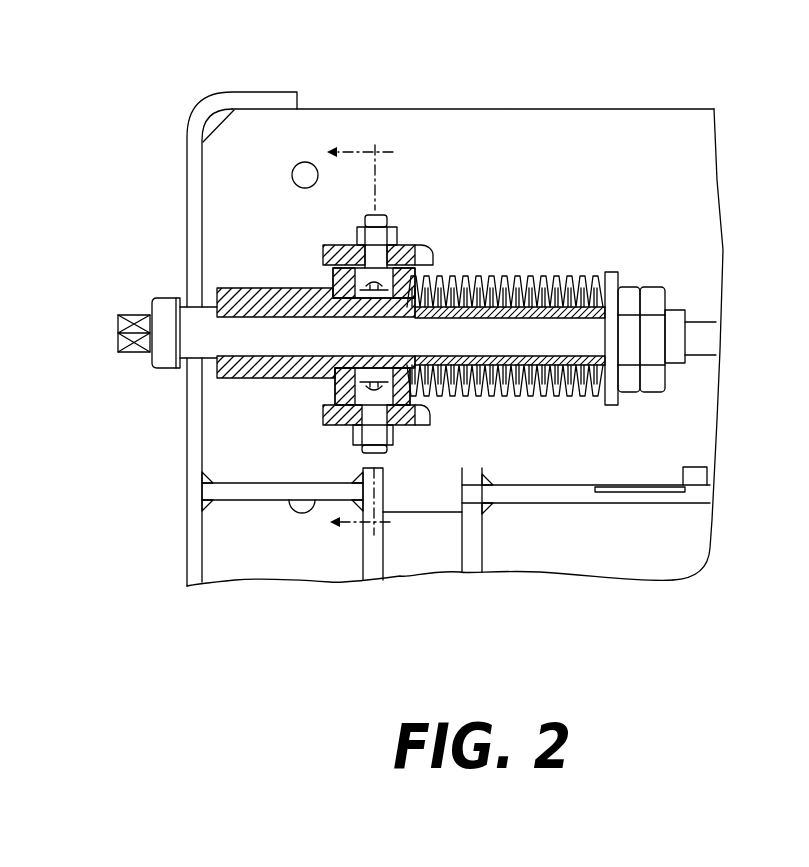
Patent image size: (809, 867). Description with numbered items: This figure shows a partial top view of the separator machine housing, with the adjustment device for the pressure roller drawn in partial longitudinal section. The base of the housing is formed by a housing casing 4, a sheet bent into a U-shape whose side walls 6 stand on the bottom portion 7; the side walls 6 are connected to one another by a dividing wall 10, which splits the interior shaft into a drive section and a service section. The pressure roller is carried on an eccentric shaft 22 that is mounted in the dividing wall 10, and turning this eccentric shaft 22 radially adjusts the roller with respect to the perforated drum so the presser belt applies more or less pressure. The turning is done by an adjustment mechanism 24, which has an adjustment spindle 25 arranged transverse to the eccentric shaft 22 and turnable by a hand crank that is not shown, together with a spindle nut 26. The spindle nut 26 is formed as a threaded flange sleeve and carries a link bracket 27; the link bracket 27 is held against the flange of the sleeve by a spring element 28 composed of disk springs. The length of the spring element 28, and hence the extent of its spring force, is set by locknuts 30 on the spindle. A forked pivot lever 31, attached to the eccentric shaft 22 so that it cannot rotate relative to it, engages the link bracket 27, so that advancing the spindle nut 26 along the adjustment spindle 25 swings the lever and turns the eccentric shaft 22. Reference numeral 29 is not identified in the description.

The housing casing 4 is at (151, 239).
The side walls 6 is at (197, 217).
The bottom portion 7 is at (496, 119).
The dividing wall 10 is at (577, 497).
The eccentric shaft 22 is at (406, 565).
The adjustment mechanism 24 is at (553, 173).
The adjustment spindle 25 is at (278, 348).
The spindle nut 26 is at (331, 290).
The link bracket 27 is at (330, 410).
The spring element 28 is at (514, 452).
The compression spring 29 is at (555, 277).
The locknuts 30 is at (656, 290).
The forked pivot lever 31 is at (406, 244).